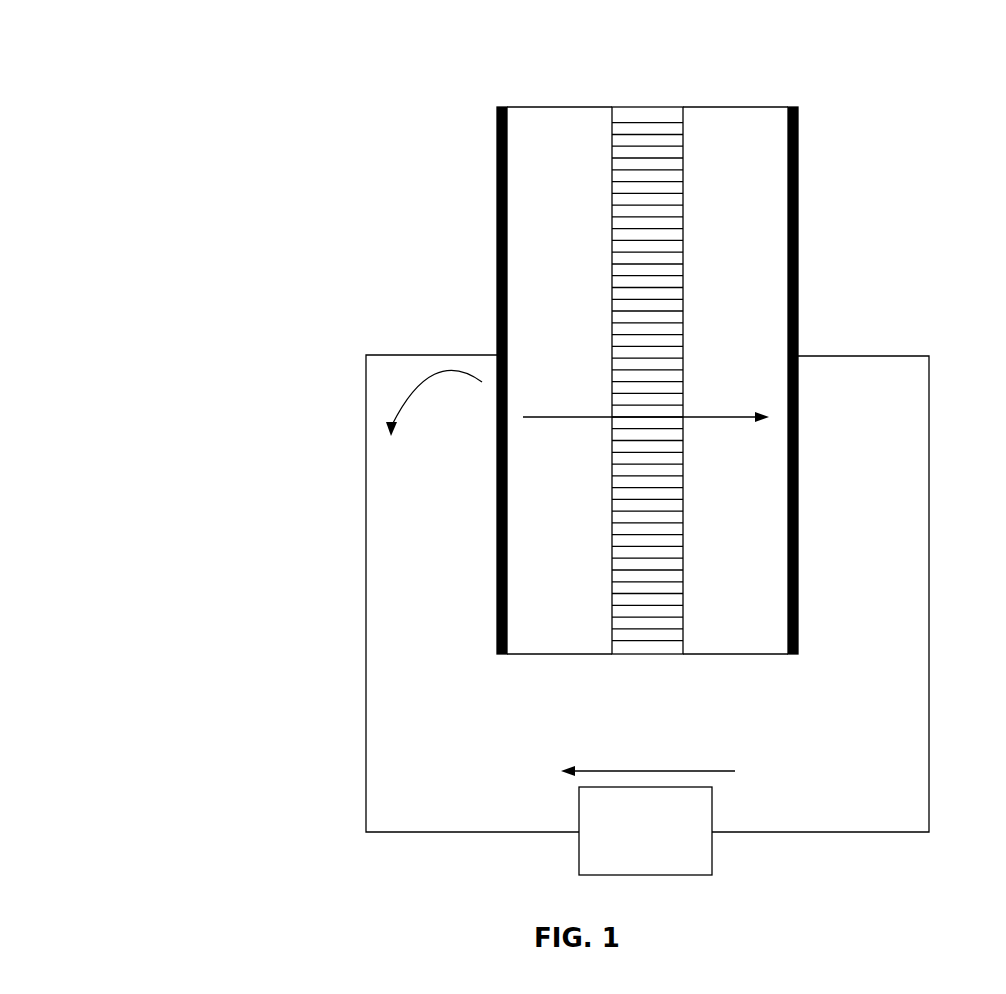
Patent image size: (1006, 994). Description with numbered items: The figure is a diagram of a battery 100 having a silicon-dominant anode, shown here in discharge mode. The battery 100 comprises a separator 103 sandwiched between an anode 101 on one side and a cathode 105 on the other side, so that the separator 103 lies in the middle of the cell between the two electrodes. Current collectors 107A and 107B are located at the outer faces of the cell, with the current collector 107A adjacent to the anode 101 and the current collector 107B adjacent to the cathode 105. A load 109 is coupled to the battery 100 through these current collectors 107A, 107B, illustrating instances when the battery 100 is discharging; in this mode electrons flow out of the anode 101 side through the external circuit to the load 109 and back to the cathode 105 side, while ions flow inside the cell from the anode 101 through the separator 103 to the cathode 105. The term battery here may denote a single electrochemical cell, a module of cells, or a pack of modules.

The battery 100 is at (184, 199).
The anode 101 is at (540, 318).
The separator 103 is at (652, 107).
The cathode 105 is at (716, 320).
The current collector 107A is at (496, 122).
The current collector 107B is at (800, 122).
The load 109 is at (625, 855).